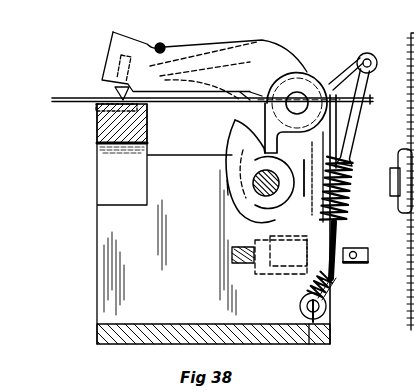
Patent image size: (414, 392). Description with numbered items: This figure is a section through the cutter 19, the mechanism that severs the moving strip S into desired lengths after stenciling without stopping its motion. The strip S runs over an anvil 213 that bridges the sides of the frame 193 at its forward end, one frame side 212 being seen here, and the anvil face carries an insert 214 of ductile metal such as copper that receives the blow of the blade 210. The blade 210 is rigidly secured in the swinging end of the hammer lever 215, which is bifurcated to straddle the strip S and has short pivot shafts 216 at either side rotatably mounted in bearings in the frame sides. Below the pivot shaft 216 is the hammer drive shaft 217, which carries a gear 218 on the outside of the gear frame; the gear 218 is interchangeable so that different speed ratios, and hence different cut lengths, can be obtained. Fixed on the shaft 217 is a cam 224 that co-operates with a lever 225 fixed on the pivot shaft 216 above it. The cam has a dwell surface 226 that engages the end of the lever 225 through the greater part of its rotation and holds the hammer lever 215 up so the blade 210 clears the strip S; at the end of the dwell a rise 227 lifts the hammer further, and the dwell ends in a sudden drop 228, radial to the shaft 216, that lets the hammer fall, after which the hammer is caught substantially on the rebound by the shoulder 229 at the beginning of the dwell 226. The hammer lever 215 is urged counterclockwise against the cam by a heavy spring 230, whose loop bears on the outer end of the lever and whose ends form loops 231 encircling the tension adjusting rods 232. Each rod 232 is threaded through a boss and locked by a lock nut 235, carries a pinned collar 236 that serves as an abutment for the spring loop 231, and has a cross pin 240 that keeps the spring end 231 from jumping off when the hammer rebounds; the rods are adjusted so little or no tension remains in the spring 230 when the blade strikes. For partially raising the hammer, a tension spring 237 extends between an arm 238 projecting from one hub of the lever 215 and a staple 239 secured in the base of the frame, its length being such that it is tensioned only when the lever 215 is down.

The strip S is at (58, 102).
The cutter 19 is at (269, 35).
The frame 193 is at (107, 333).
The blade 210 is at (115, 87).
The frame side 212 is at (100, 275).
The anvil 213 is at (118, 127).
The insert 214 is at (110, 106).
The hammer lever 215 is at (118, 43).
The pivot shaft 216 is at (297, 100).
The hammer drive shaft 217 is at (258, 193).
The gear 218 is at (409, 32).
The cam 224 is at (224, 194).
The lever 225 is at (256, 100).
The dwell surface 226 is at (287, 215).
The rise 227 is at (237, 166).
The drop 228 is at (237, 126).
The shoulder 229 is at (283, 163).
The heavy spring 230 is at (171, 42).
The spring loop 231 is at (341, 273).
The tension adjusting rod 232 is at (372, 240).
The lock nut 235 is at (263, 272).
The collar 236 is at (332, 288).
The tension spring 237 is at (343, 207).
The arm 238 is at (352, 66).
The staple 239 is at (330, 319).
The cross pin 240 is at (353, 251).